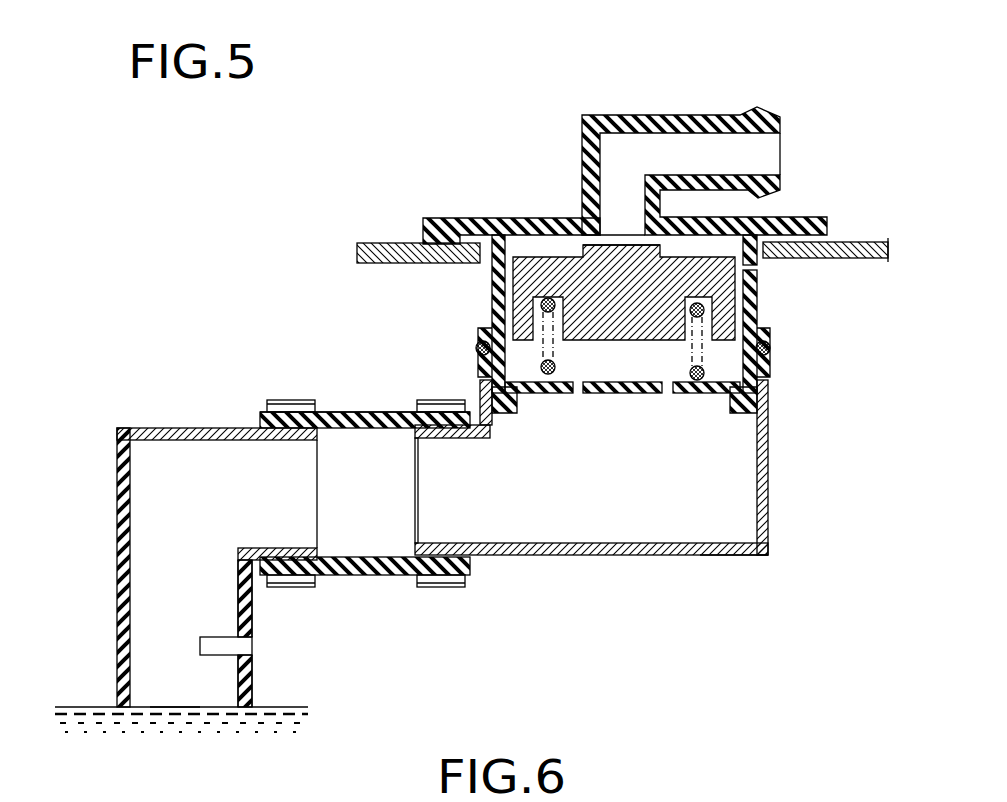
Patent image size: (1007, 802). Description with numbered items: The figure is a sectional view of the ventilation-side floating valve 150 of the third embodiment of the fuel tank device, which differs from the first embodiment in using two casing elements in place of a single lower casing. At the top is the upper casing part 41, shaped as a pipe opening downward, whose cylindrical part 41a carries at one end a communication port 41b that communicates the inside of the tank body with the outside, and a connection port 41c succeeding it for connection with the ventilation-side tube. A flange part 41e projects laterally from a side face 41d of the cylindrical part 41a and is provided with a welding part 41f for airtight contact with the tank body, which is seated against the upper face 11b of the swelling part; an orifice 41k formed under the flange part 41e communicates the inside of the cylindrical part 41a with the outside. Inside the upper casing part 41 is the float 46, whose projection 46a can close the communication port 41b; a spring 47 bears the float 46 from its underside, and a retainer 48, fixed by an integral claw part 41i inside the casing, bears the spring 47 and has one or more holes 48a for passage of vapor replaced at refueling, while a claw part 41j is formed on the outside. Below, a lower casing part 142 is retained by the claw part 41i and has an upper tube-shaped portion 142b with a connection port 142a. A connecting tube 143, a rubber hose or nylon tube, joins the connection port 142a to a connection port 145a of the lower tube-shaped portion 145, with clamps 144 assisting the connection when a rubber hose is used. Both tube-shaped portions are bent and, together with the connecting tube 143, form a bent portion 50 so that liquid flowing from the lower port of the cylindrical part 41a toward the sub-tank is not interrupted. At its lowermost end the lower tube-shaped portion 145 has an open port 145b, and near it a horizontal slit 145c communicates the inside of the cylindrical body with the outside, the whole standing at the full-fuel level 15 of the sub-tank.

The upper casing part 41 is at (693, 106).
The cylindrical part 41a is at (490, 328).
The communication port 41b is at (620, 232).
The connection port 41c is at (783, 123).
The side face 41d is at (758, 309).
The flange part 41e is at (475, 218).
The welding part 41f is at (423, 238).
The claw part 41i is at (505, 398).
The claw part 41j is at (771, 375).
The orifice 41k is at (758, 266).
The upper face of the swelling part 11b is at (845, 240).
The float 46 is at (511, 281).
The projection 46a is at (585, 244).
The spring 47 is at (499, 363).
The retainer 48 is at (770, 418).
The holes 48a is at (583, 396).
The bent portion 50 is at (613, 557).
The lower casing part 142 is at (670, 566).
The connection port 142a is at (410, 497).
The upper tube-shaped portion 142b is at (743, 557).
The connecting tube 143 is at (337, 410).
The clamps 144 is at (437, 587).
The lower tube-shaped portion 145 is at (117, 507).
The connection port 145a is at (318, 533).
The open port 145b is at (175, 710).
The horizontal slit 145c is at (246, 645).
The full-fuel level 15 is at (96, 706).
The ventilation-side floating valve 150 is at (245, 338).